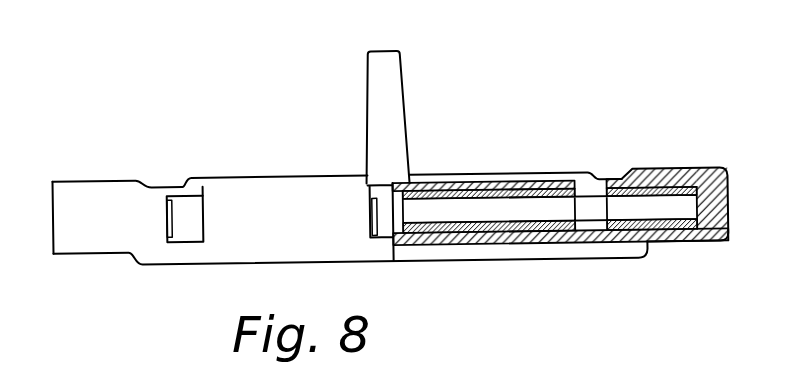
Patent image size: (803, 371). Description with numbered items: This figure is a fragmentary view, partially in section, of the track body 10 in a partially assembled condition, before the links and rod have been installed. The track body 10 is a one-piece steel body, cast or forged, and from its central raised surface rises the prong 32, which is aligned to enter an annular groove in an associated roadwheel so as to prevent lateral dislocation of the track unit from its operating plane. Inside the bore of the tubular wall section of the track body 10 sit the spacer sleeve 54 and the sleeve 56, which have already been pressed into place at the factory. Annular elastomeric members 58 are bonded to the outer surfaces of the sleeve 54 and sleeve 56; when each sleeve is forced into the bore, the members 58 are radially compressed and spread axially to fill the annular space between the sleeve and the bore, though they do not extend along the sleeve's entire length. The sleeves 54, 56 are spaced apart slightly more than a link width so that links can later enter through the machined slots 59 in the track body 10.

The track body 10 is at (258, 197).
The prong 32 is at (377, 58).
The spacer sleeve 54 is at (525, 180).
The sleeve 56 is at (700, 167).
The annular elastomeric member 58 is at (650, 170).
The machined slot 59 is at (183, 208).